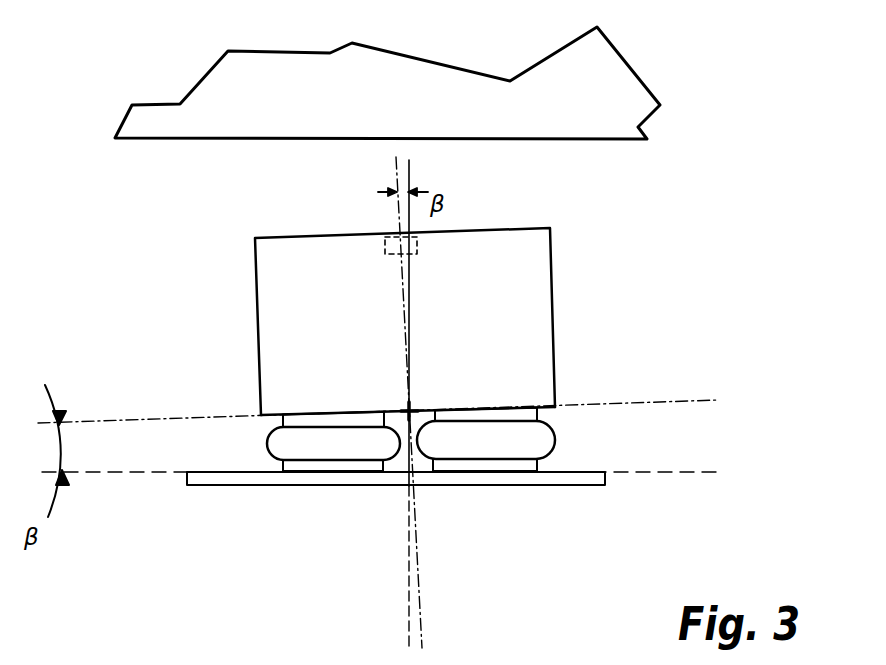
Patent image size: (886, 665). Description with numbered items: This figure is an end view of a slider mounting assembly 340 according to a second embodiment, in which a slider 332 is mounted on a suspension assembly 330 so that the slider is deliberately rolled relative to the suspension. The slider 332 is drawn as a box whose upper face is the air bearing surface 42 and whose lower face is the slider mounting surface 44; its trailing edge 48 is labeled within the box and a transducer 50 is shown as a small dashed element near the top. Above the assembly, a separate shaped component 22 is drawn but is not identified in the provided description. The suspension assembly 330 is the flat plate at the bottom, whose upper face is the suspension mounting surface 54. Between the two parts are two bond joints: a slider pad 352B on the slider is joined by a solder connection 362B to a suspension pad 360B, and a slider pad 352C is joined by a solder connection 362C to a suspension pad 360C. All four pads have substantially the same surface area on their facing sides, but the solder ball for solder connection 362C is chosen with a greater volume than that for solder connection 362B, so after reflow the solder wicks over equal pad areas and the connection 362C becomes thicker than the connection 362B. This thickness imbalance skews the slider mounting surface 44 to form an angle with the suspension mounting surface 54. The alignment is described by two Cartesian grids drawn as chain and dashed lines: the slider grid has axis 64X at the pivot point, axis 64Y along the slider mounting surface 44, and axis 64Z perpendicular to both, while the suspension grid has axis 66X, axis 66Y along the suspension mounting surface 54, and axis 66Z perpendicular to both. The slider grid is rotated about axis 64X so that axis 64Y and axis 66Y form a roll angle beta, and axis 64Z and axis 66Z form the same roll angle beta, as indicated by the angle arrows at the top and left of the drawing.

The vehicle body 22 is at (216, 150).
The slider mounting assembly 340 is at (575, 204).
The axis 64z 64Z is at (396, 165).
The axis 66z 66Z is at (409, 165).
The air bearing surface 42 is at (312, 237).
The slider mounting surface 44 is at (548, 409).
The slider 332 is at (247, 270).
The transducer 50 is at (383, 256).
The trailing edge 48 is at (536, 312).
The axis 64x 64X is at (412, 402).
The axis 66x 66X is at (411, 487).
The axis 64y 64Y is at (658, 402).
The axis 66y 66Y is at (665, 473).
The slider pad 352B is at (346, 423).
The solder connection 362B is at (292, 438).
The suspension pad 360B is at (308, 468).
The slider pad 352C is at (462, 413).
The solder connection 362C is at (514, 445).
The suspension pad 360C is at (462, 468).
The suspension assembly 330 is at (318, 505).
The suspension mounting surface 54 is at (577, 472).